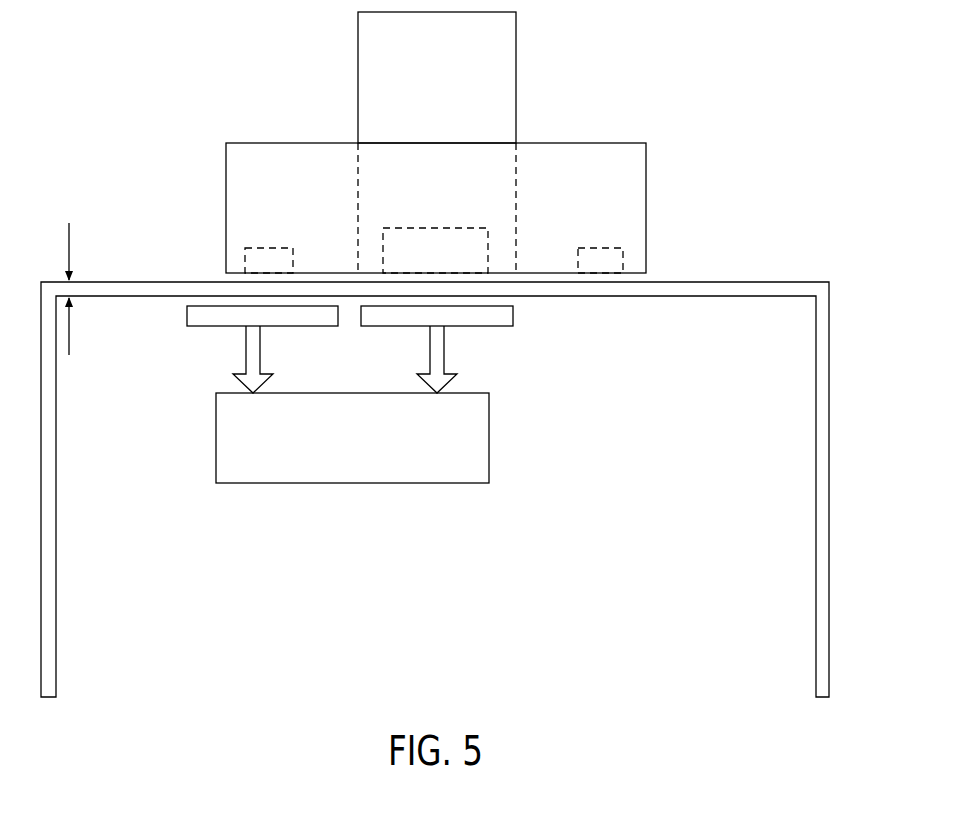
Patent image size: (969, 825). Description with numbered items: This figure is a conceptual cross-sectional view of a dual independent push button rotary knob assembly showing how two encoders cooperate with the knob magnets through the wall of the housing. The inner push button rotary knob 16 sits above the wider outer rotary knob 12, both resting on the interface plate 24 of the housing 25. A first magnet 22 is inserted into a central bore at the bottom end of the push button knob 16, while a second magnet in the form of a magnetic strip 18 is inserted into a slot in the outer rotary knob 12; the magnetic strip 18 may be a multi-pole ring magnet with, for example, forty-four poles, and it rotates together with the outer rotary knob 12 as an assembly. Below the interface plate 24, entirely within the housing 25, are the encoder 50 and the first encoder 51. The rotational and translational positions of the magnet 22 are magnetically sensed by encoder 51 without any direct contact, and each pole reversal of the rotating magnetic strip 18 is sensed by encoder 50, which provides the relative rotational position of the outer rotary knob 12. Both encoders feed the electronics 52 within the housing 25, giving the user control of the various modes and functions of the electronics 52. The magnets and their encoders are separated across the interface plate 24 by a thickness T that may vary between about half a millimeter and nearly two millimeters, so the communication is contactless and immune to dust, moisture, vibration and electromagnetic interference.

The outer rotary knob 12 is at (616, 140).
The inner push button rotary knob 16 is at (518, 77).
The magnetic strip 18 is at (258, 256).
The first magnet 22 is at (405, 247).
The interface plate 24 is at (772, 282).
The housing 25 is at (668, 507).
The encoder 50 is at (185, 329).
The first encoder 51 is at (516, 329).
The electronics 52 is at (214, 486).
The thickness T is at (69, 243).